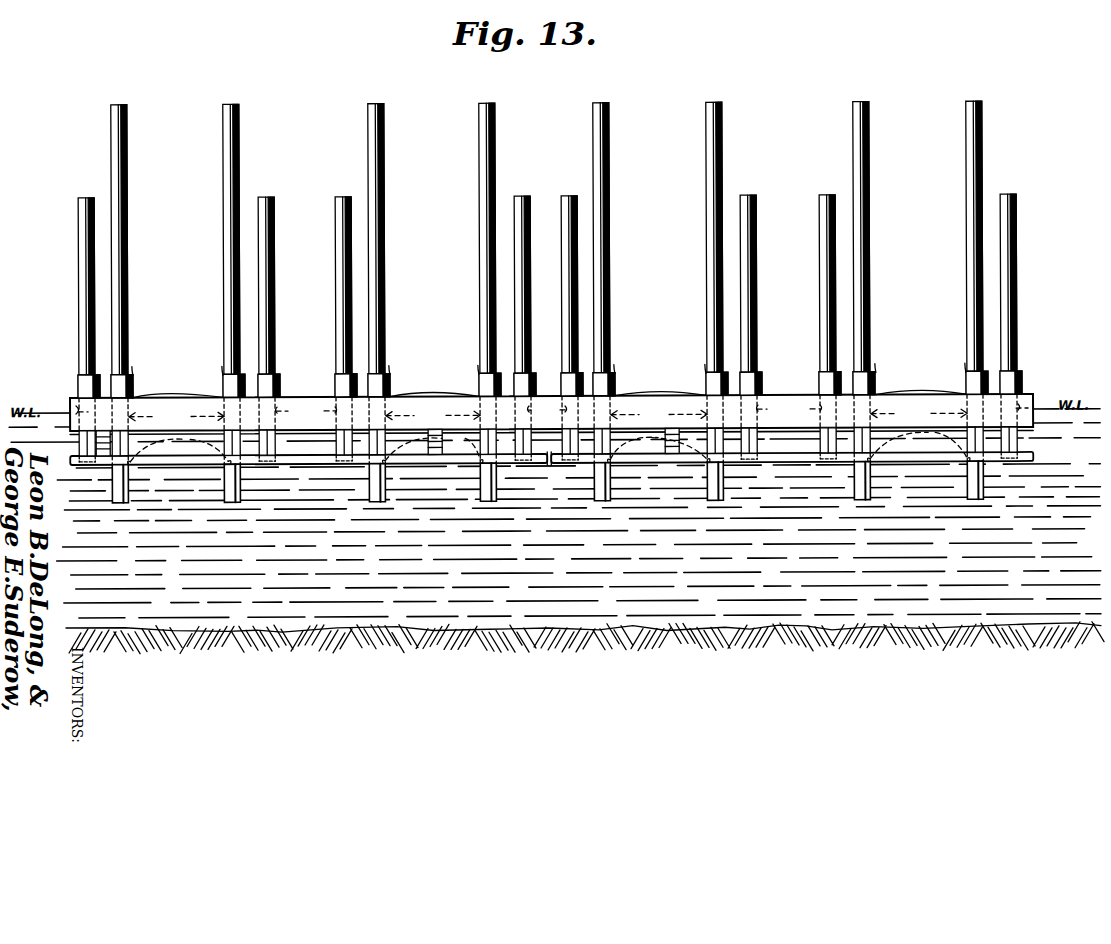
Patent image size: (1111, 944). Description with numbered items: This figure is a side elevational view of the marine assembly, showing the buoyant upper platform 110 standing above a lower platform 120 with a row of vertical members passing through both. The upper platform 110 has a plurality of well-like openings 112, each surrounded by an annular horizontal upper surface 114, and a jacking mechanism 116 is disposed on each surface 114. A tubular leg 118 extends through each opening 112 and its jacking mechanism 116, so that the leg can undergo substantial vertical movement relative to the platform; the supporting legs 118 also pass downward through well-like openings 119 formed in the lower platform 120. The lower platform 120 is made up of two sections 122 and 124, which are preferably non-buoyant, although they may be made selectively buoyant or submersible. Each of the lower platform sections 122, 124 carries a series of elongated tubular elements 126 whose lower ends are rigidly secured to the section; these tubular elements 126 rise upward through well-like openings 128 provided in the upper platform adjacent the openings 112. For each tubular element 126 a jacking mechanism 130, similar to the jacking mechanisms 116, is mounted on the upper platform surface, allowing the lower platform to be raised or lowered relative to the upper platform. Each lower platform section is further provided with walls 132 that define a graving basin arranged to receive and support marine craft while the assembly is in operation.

The upper platform 110 is at (680, 401).
The well-like openings 112 is at (548, 415).
The annular horizontal upper surfaces 114 is at (223, 398).
The jacking mechanism 116 is at (223, 377).
The tubular leg 118 is at (224, 250).
The well-like openings 119 is at (548, 446).
The lower platform 120 is at (549, 466).
The lower platform section 122 is at (642, 466).
The lower platform section 124 is at (412, 466).
The elongated tubular elements 126 is at (79, 318).
The well-like openings 128 is at (71, 400).
The jacking mechanism 130 is at (79, 377).
The walls 132 is at (292, 466).